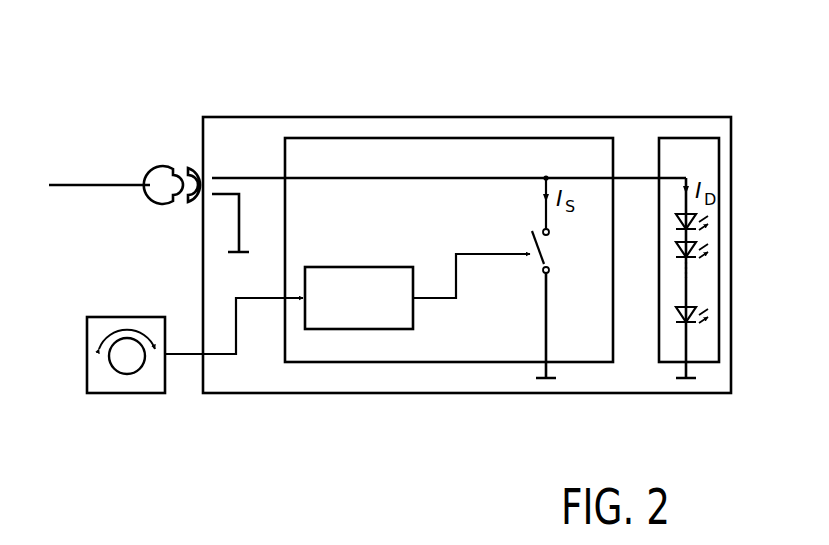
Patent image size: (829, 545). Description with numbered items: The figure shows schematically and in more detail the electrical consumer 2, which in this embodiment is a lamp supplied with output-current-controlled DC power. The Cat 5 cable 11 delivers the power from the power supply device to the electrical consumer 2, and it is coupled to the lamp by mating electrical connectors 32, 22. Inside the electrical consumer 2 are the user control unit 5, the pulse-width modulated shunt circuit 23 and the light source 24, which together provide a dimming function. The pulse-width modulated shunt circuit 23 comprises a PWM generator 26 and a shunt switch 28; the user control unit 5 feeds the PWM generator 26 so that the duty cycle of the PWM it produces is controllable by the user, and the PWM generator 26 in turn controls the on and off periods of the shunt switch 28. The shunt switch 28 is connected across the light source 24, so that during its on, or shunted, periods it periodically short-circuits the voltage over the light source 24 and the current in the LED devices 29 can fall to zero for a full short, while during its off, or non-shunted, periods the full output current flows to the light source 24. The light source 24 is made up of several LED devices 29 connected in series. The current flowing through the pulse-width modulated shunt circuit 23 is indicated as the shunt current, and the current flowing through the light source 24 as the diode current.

The electrical consumer 2 is at (599, 103).
The user control unit 5 is at (120, 395).
The Cat 5 cable 11 is at (100, 188).
The electrical connector 22 is at (192, 163).
The pulse-width modulated shunt circuit 23 is at (520, 137).
The light source 24 is at (693, 137).
The PWM generator 26 is at (351, 330).
The shunt switch 28 is at (522, 234).
The LED devices 29 is at (702, 268).
The electrical connector 32 is at (160, 166).